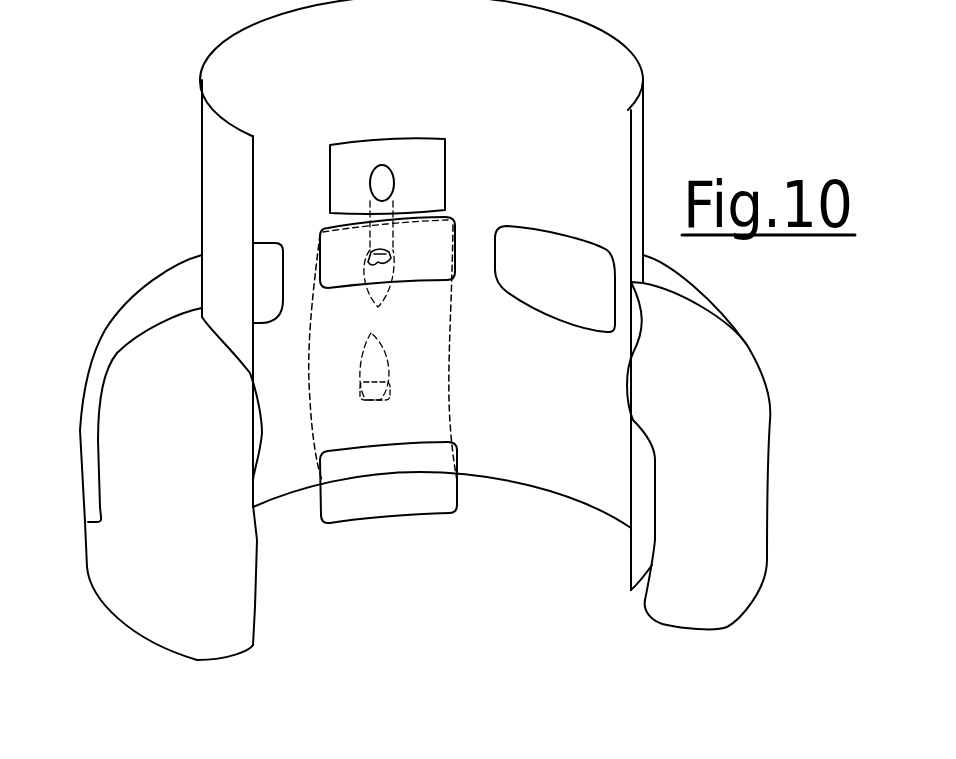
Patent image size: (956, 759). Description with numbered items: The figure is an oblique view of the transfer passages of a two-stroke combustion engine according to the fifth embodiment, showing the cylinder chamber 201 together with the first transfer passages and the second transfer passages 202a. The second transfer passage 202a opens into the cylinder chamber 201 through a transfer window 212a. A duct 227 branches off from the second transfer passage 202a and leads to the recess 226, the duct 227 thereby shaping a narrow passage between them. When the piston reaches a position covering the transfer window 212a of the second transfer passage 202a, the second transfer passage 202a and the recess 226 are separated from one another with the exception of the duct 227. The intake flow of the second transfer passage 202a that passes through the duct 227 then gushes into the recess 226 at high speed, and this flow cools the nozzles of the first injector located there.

The cylinder chamber 201 is at (458, 59).
The second transfer passages 202a is at (423, 346).
The transfer window 212a is at (340, 252).
The recess 226 is at (422, 152).
The duct 227 is at (378, 238).